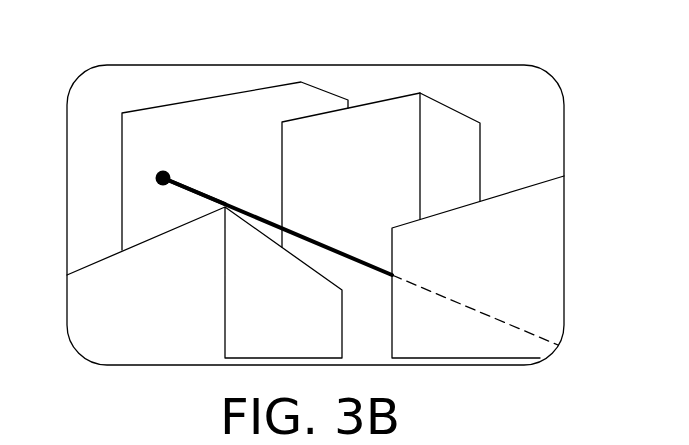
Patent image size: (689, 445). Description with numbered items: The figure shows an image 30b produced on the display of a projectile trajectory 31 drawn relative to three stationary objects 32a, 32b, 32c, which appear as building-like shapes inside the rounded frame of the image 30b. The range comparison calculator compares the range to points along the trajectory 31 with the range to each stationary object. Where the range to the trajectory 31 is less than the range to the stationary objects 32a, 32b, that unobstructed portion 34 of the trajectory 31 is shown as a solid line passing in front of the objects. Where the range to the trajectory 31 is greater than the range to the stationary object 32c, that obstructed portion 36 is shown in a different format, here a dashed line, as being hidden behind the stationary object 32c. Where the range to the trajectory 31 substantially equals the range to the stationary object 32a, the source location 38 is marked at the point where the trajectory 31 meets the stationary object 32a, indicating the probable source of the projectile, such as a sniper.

The image 30b is at (95, 43).
The stationary object 32a is at (248, 90).
The stationary object 32b is at (443, 102).
The stationary object 32c is at (535, 183).
The unobstructed portion 34 is at (300, 232).
The obstructed portion 36 is at (476, 305).
The source location 38 is at (158, 173).
The trajectory 31 is at (185, 188).